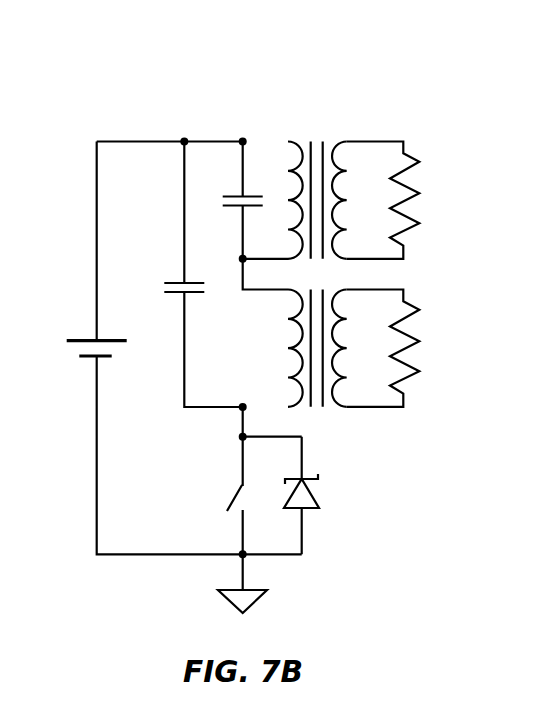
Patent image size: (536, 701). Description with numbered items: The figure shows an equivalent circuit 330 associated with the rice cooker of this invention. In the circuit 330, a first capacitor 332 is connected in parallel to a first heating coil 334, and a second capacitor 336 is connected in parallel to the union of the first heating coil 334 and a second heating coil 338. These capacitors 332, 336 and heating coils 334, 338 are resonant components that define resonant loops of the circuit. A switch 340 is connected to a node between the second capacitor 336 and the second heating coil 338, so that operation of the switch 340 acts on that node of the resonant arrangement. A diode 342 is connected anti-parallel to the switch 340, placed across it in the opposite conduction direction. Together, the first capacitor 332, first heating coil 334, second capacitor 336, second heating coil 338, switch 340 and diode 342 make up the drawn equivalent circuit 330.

The equivalent circuit 330 is at (315, 68).
The first capacitor 332 is at (233, 196).
The first heating coil 334 is at (294, 140).
The second capacitor 336 is at (177, 282).
The second heating coil 338 is at (299, 404).
The switch 340 is at (237, 495).
The diode 342 is at (308, 478).